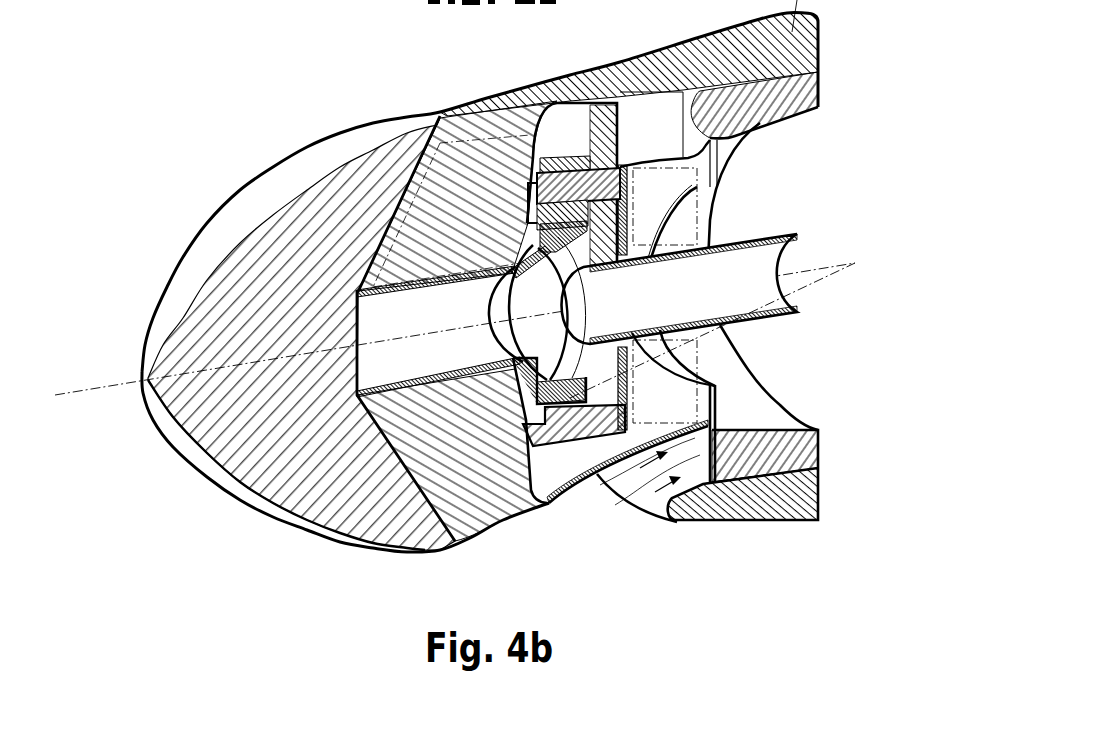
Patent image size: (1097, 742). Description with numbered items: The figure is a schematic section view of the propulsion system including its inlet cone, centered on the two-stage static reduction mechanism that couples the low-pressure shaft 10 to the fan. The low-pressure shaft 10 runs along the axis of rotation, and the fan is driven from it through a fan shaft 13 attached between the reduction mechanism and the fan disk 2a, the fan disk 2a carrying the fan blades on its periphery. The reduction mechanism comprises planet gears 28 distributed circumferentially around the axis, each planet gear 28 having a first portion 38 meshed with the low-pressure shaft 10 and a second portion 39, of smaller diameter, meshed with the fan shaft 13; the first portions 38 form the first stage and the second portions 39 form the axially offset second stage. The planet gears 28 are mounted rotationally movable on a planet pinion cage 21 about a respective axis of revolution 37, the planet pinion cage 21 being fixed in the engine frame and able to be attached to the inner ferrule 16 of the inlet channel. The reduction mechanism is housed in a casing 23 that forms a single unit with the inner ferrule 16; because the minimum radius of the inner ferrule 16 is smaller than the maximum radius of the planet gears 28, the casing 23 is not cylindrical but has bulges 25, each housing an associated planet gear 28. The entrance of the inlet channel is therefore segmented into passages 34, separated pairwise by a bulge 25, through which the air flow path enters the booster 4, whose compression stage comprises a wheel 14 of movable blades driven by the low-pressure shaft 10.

The fan shaft 13 is at (410, 360).
The fan disk 2a is at (476, 510).
The bulges 25 is at (603, 90).
The second portion 39 is at (573, 158).
The first portion 38 is at (620, 133).
The low-pressure compressor 4 is at (802, 450).
The inner ferrule 16 is at (727, 167).
The axis of revolution 37 is at (660, 195).
The low-pressure shaft 10 is at (780, 292).
The planet gears 28 is at (562, 400).
The casing 23 is at (548, 447).
The planet pinion cage 21 is at (718, 389).
The wheel 14 is at (617, 462).
The passages 34 is at (627, 505).